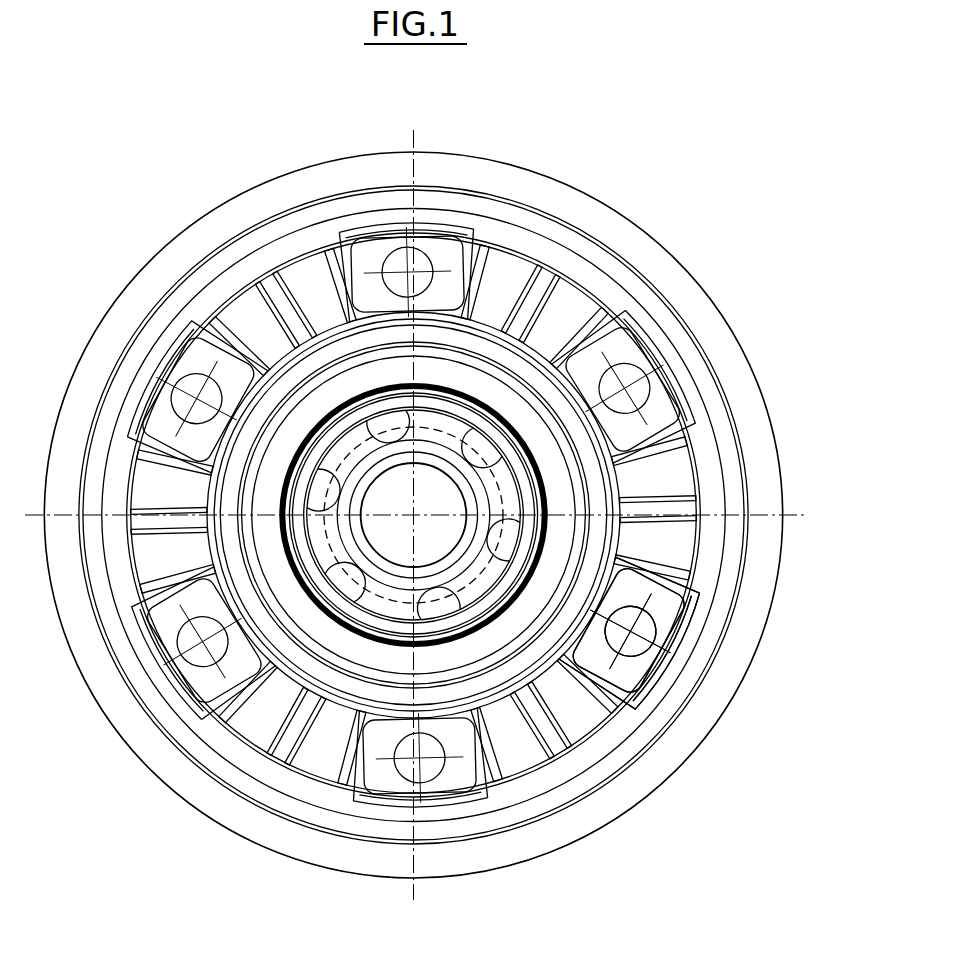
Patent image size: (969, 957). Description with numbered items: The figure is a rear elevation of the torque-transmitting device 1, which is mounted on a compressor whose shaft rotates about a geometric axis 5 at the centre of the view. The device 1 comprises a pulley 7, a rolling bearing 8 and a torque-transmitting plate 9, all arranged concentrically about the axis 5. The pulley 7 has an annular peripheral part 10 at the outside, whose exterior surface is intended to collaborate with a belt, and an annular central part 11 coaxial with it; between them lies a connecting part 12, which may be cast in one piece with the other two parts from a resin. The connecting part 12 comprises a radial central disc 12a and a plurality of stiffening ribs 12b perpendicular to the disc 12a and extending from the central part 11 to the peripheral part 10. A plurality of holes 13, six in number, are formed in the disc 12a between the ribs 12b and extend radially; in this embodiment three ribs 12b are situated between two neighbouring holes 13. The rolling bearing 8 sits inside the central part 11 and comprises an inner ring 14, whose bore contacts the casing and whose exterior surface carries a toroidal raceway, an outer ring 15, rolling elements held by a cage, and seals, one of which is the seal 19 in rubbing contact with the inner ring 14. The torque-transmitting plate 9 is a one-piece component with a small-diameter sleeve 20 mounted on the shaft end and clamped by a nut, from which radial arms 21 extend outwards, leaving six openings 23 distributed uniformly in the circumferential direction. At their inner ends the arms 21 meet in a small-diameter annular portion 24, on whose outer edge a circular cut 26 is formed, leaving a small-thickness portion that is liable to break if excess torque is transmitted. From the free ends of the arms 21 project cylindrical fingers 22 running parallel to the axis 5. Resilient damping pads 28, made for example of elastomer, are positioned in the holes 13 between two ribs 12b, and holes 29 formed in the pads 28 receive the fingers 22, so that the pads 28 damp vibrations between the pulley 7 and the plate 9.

The torque-transmitting device 1 is at (590, 170).
The geometric axis 5 is at (415, 514).
The pulley 7 is at (190, 815).
The rolling bearing 8 is at (327, 393).
The torque-transmitting plate 9 is at (335, 572).
The annular peripheral part 10 is at (312, 790).
The annular central part 11 is at (516, 682).
The connecting part 12 is at (512, 745).
The radial central disc 12a is at (590, 310).
The stiffening ribs 12b is at (518, 250).
The holes 13 is at (690, 378).
The inner ring 14 is at (190, 350).
The outer ring 15 is at (436, 355).
The seal 19 is at (240, 297).
The small-diameter sleeve 20 is at (387, 567).
The radial arms 21 is at (485, 575).
The fingers 22 is at (643, 638).
The openings 23 is at (636, 325).
The small-diameter annular portion 24 is at (540, 785).
The cut 26 is at (515, 470).
The damping pads 28 is at (642, 668).
The holes 29 is at (426, 770).